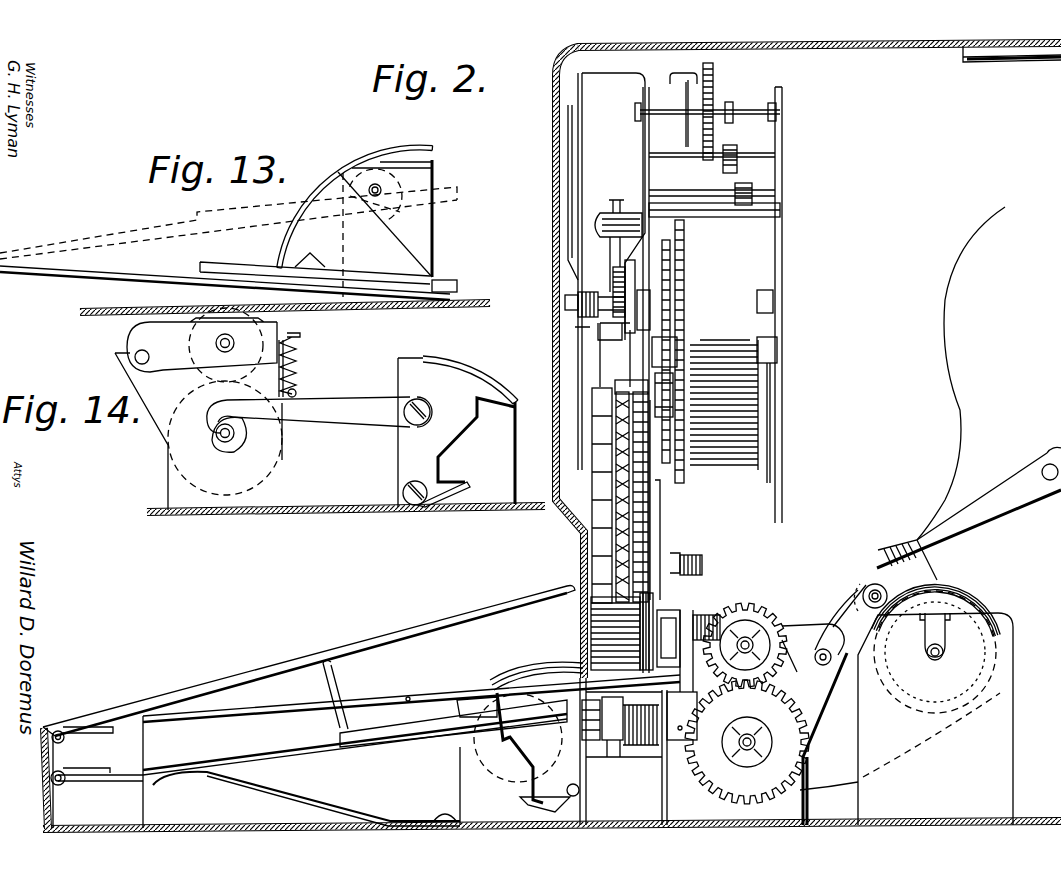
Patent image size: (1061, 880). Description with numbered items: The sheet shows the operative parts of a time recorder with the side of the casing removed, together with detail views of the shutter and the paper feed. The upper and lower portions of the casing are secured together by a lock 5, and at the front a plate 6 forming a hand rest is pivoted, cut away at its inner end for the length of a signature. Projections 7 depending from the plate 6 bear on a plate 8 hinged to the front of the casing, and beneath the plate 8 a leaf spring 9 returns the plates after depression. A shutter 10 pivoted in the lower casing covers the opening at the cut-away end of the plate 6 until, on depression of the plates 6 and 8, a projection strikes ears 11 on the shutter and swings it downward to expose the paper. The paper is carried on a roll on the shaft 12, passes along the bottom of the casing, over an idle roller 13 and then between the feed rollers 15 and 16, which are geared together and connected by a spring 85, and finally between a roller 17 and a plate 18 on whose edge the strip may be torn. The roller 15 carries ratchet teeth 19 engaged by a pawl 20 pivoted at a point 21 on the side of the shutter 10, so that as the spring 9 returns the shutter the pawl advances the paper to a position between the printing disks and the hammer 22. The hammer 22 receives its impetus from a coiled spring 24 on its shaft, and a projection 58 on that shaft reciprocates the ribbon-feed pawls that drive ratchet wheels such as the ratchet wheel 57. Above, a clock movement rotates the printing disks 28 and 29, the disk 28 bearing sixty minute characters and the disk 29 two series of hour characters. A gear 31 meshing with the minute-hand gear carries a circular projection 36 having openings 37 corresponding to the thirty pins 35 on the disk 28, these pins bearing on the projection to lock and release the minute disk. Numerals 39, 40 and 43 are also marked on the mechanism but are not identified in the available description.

In FIG. 2, the lock 5 is at (1003, 55).
In FIG. 2, the plate forming a hand rest 6 is at (402, 632).
In FIG. 2, the projections 7 is at (350, 677).
In FIG. 2, the plate 8 is at (273, 760).
In FIG. 2, the leaf spring 9 is at (297, 800).
In FIG. 2, the shutter 10 is at (523, 663).
In FIG. 13, the shutter 10 is at (295, 222).
In FIG. 14, the shutter 10 is at (470, 373).
In FIG. 2, the ears 11 is at (540, 793).
In FIG. 14, the ears 11 is at (448, 483).
In FIG. 2, the shaft 12 is at (944, 656).
In FIG. 14, the shaft 12 is at (225, 448).
In FIG. 2, the idle roller 13 is at (490, 753).
In FIG. 2, the feed roller 15 is at (743, 740).
In FIG. 2, the feed roller 16 is at (746, 640).
In FIG. 2, the roller 17 is at (866, 584).
In FIG. 2, the plate 18 is at (895, 552).
In FIG. 14, the ratchet teeth 19 is at (212, 432).
In FIG. 14, the pawl 20 is at (313, 407).
In FIG. 14, the pivot point 21 is at (420, 407).
In FIG. 2, the hammer 22 is at (605, 727).
In FIG. 2, the coiled spring 24 is at (637, 745).
In FIG. 2, the printing disk 28 is at (630, 490).
In FIG. 2, the printing disk 29 is at (598, 450).
In FIG. 2, the gear 31 is at (633, 417).
In FIG. 2, the pins 35 is at (637, 527).
In FIG. 2, the circular projection 36 is at (655, 386).
In FIG. 2, the openings 37 is at (586, 704).
In FIG. 2, the gear column 39 is at (640, 300).
In FIG. 2, the cylinder 40 is at (617, 284).
In FIG. 2, the bracket 43 is at (600, 335).
In FIG. 2, the ratchet wheel 57 is at (640, 635).
In FIG. 2, the projection 58 is at (683, 716).
In FIG. 14, the spring 85 is at (298, 364).